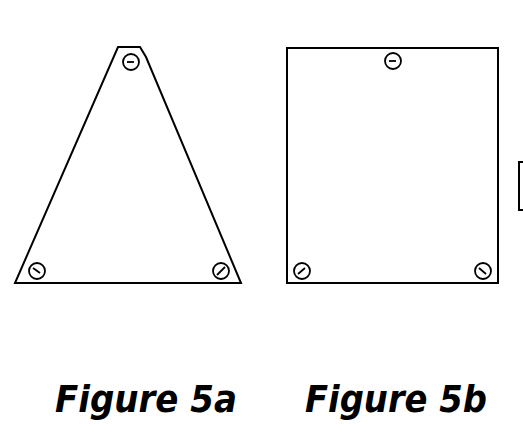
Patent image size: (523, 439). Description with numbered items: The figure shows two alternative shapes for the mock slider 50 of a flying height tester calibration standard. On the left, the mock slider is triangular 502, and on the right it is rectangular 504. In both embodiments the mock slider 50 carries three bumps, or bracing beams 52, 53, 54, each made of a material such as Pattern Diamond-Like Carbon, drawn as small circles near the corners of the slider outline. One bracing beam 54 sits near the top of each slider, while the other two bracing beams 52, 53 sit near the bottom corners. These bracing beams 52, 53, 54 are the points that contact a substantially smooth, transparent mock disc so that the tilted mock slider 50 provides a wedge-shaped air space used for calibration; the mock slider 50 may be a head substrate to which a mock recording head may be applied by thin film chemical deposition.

In FIG. 5A, the mock slider 50 is at (139, 47).
In FIG. 5B, the mock slider 50 is at (370, 47).
In FIG. 5A, the bracing beam 52 is at (43, 276).
In FIG. 5B, the bracing beam 52 is at (156, 337).
In FIG. 5A, the bracing beam 53 is at (222, 268).
In FIG. 5B, the bracing beam 53 is at (480, 268).
In FIG. 5A, the bracing beam 54 is at (139, 62).
In FIG. 5B, the bracing beam 54 is at (385, 61).
In FIG. 5A, the triangular mock slider 502 is at (128, 161).
In FIG. 5B, the rectangular mock slider 504 is at (392, 146).